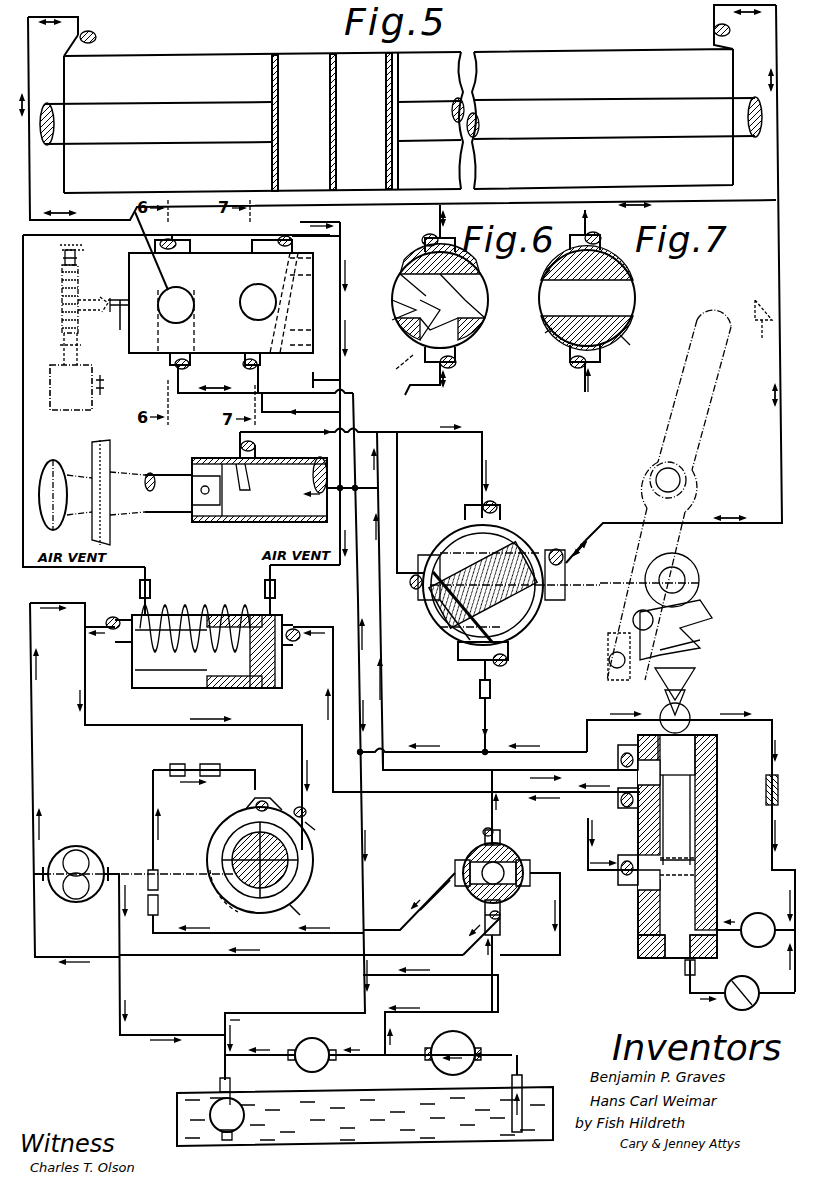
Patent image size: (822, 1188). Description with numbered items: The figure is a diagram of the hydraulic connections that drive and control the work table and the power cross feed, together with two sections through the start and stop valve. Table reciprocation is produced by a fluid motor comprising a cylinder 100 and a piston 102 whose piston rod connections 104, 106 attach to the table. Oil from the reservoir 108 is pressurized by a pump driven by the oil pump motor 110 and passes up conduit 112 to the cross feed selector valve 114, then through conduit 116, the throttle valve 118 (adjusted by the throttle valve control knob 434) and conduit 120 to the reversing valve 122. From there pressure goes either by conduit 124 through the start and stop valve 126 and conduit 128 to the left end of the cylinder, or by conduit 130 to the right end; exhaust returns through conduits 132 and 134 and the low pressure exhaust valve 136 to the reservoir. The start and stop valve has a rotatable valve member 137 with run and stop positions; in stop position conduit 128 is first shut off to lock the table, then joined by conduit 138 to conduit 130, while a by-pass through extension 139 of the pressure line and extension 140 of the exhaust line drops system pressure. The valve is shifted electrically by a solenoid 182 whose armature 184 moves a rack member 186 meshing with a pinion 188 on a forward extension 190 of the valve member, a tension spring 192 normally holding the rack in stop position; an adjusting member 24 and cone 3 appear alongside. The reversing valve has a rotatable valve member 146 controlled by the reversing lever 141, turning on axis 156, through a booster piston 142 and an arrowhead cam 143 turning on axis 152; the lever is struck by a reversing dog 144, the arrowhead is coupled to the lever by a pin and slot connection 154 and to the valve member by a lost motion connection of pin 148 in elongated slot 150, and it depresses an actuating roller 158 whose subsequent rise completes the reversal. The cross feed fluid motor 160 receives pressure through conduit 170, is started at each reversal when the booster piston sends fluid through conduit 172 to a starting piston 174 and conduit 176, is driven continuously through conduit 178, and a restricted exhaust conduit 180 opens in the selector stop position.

In FIG. 5, the hand wheel cone 3 is at (108, 413).
In FIG. 5, the adjusting member 24 is at (103, 385).
In FIG. 5, the cylinder 100 is at (176, 53).
In FIG. 5, the piston 102 is at (310, 60).
In FIG. 5, the piston rod connection 104 is at (110, 141).
In FIG. 5, the piston rod connection 106 is at (667, 126).
In FIG. 5, the reservoir 108 is at (178, 1108).
In FIG. 5, the oil pump motor 110 is at (465, 1038).
In FIG. 5, the conduit 112 is at (494, 962).
In FIG. 5, the cross feed selector valve 114 is at (470, 860).
In FIG. 5, the conduit 116 is at (324, 505).
In FIG. 5, the throttle valve 118 is at (258, 522).
In FIG. 5, the conduit 120 is at (238, 448).
In FIG. 5, the reversing valve 122 is at (530, 625).
In FIG. 5, the conduit 124 is at (165, 370).
In FIG. 6, the conduit 124 is at (425, 357).
In FIG. 5, the start and stop valve 126 is at (120, 330).
In FIG. 5, the conduit 128 is at (95, 40).
In FIG. 5, the conduit 130 is at (690, 40).
In FIG. 5, the conduit 132 is at (450, 712).
In FIG. 5, the conduit 134 is at (366, 835).
In FIG. 5, the low pressure exhaust valve 136 is at (217, 1087).
In FIG. 5, the rotatable valve member 137 is at (228, 335).
In FIG. 6, the rotatable valve member 137 is at (471, 332).
In FIG. 7, the rotatable valve member 137 is at (600, 335).
In FIG. 5, the conduit 138 is at (185, 250).
In FIG. 6, the conduit 138 is at (425, 246).
In FIG. 5, the extension of pressure line 139 is at (255, 366).
In FIG. 7, the extension of pressure line 139 is at (570, 360).
In FIG. 5, the extension of exhaust line 140 is at (247, 248).
In FIG. 7, the extension of exhaust line 140 is at (602, 242).
In FIG. 5, the reversing lever 141 is at (695, 413).
In FIG. 5, the booster piston 142 is at (665, 828).
In FIG. 5, the arrowhead cam 143 is at (678, 655).
In FIG. 5, the reversing dog 144 is at (760, 330).
In FIG. 5, the rotatable valve member 146 is at (505, 555).
In FIG. 5, the pin 148 is at (705, 610).
In FIG. 5, the elongated slot 150 is at (630, 613).
In FIG. 5, the axis 152 is at (683, 582).
In FIG. 5, the pin and slot connection 154 is at (610, 668).
In FIG. 5, the axis 156 is at (667, 473).
In FIG. 5, the actuating roller 158 is at (666, 715).
In FIG. 5, the cross feed fluid motor 160 is at (100, 845).
In FIG. 5, the conduit 170 is at (153, 800).
In FIG. 5, the conduit 172 is at (293, 645).
In FIG. 5, the starting piston 174 is at (246, 614).
In FIG. 5, the conduit 176 is at (273, 718).
In FIG. 5, the conduit 178 is at (32, 628).
In FIG. 5, the exhaust conduit 180 is at (545, 882).
In FIG. 5, the solenoid 182 is at (71, 387).
In FIG. 5, the armature 184 is at (63, 361).
In FIG. 5, the rack member 186 is at (64, 272).
In FIG. 5, the pinion 188 is at (62, 300).
In FIG. 5, the forward extension 190 is at (95, 298).
In FIG. 5, the tension spring 192 is at (75, 258).
In FIG. 5, the throttle valve control knob 434 is at (60, 458).